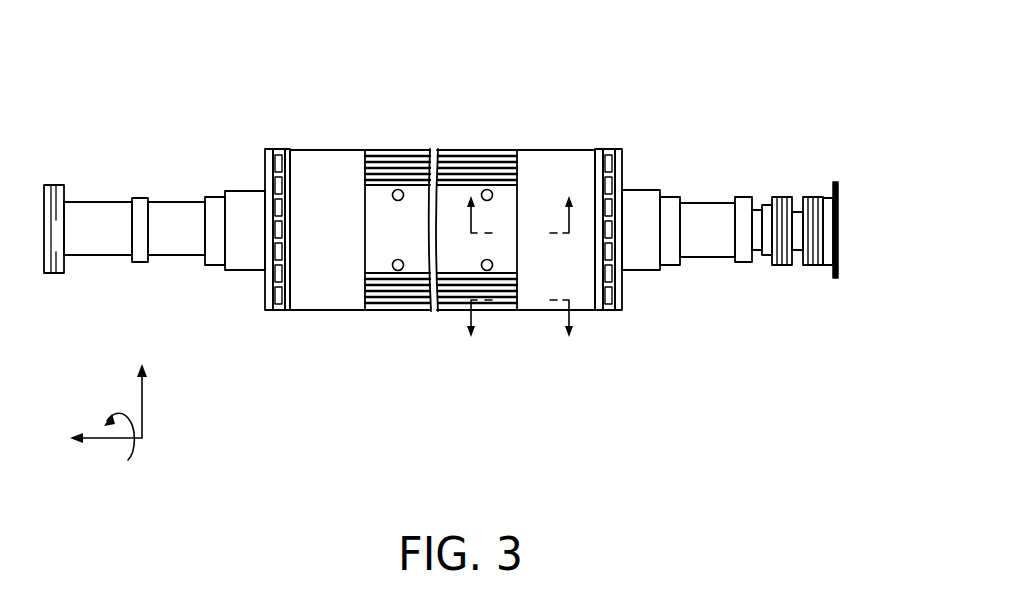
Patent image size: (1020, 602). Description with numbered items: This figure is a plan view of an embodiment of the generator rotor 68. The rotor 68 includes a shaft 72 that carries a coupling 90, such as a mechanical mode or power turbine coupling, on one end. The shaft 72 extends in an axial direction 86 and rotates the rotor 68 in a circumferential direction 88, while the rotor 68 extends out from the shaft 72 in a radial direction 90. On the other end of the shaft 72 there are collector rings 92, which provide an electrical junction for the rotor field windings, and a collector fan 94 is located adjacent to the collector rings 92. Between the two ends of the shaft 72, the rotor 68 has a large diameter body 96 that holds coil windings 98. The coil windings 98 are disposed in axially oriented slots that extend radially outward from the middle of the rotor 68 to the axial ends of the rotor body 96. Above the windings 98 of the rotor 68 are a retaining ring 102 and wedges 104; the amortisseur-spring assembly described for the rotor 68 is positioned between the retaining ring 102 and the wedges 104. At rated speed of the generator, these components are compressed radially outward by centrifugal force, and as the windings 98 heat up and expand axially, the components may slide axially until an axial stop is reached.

The generator rotor 68 is at (602, 43).
The shaft 72 is at (97, 256).
The axial direction 86 is at (100, 439).
The circumferential direction 88 is at (132, 456).
The coupling 90 is at (57, 184).
The collector rings 92 is at (814, 196).
The collector fan 94 is at (838, 277).
The rotor body 96 is at (472, 128).
The coil windings 98 is at (392, 165).
The retaining ring 102 is at (303, 173).
The wedges 104 is at (402, 190).